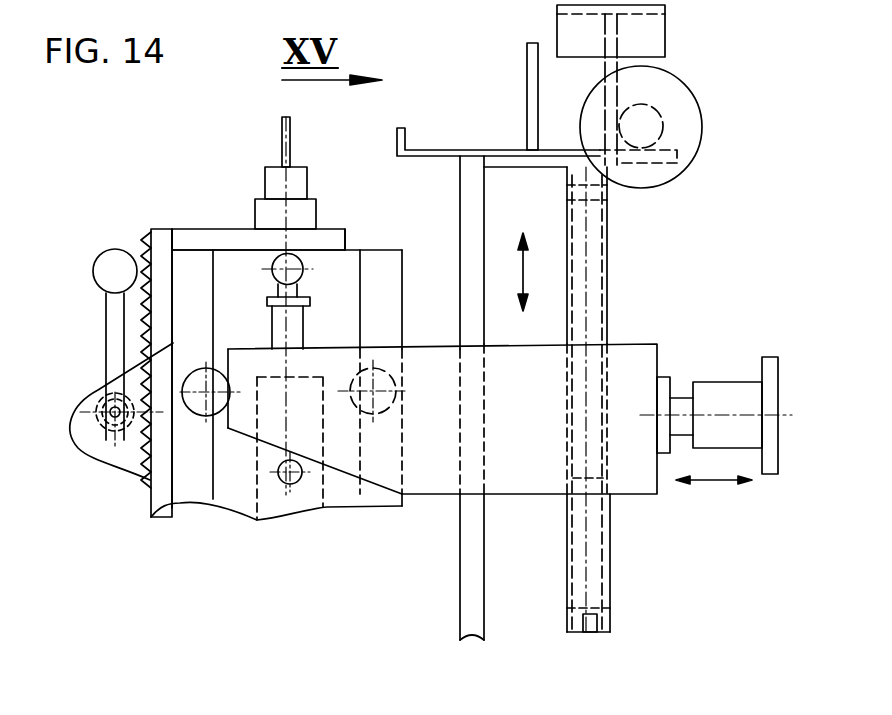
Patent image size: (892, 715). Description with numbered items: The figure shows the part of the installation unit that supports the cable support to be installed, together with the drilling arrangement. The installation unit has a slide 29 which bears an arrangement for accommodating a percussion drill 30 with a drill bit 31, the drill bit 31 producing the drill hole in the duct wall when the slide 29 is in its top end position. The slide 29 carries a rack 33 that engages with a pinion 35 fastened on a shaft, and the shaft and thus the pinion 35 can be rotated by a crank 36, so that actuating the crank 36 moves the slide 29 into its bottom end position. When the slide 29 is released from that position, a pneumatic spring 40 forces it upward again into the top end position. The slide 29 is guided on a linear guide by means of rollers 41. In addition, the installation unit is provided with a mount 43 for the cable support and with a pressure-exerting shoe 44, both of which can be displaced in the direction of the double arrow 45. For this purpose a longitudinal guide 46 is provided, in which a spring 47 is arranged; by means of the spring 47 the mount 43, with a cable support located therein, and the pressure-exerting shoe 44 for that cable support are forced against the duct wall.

The slide 29 is at (380, 317).
The percussion drill 30 is at (280, 180).
The drill bit 31 is at (283, 130).
The rack 33 is at (143, 233).
The pinion 35 is at (102, 463).
The crank 36 is at (118, 325).
The pneumatic spring 40 is at (282, 320).
The rollers 41 is at (203, 417).
The mount 43 is at (427, 147).
The pressure-exerting shoe 44 is at (648, 38).
The double arrow 45 is at (523, 272).
The longitudinal guide 46 is at (607, 308).
The spring 47 is at (607, 222).